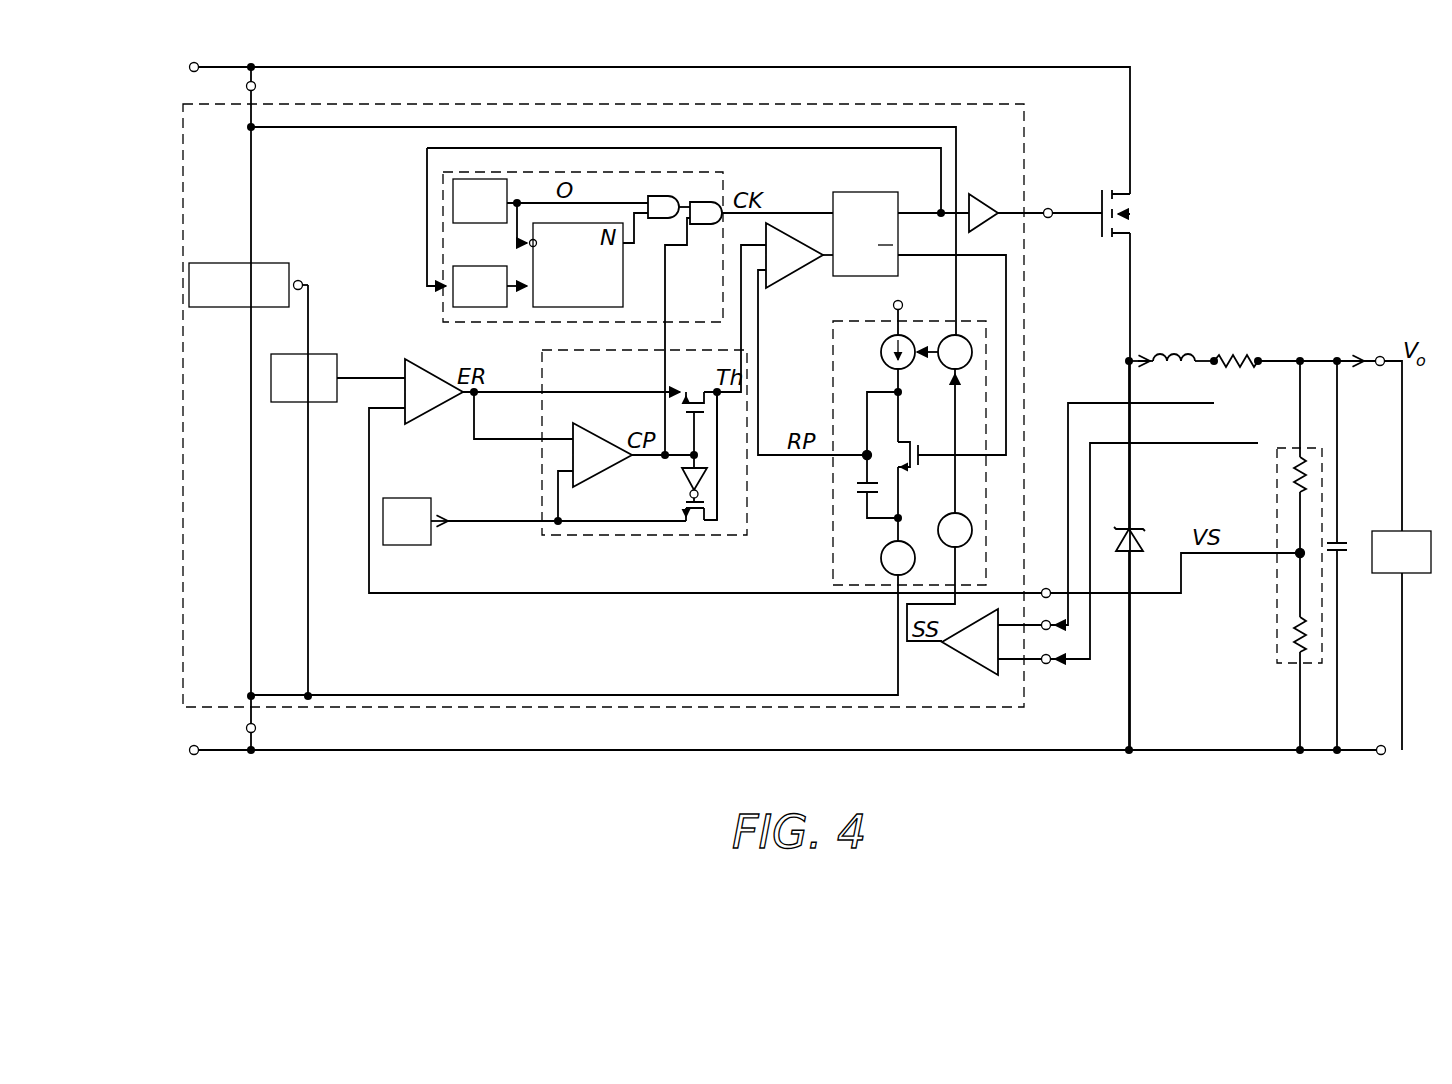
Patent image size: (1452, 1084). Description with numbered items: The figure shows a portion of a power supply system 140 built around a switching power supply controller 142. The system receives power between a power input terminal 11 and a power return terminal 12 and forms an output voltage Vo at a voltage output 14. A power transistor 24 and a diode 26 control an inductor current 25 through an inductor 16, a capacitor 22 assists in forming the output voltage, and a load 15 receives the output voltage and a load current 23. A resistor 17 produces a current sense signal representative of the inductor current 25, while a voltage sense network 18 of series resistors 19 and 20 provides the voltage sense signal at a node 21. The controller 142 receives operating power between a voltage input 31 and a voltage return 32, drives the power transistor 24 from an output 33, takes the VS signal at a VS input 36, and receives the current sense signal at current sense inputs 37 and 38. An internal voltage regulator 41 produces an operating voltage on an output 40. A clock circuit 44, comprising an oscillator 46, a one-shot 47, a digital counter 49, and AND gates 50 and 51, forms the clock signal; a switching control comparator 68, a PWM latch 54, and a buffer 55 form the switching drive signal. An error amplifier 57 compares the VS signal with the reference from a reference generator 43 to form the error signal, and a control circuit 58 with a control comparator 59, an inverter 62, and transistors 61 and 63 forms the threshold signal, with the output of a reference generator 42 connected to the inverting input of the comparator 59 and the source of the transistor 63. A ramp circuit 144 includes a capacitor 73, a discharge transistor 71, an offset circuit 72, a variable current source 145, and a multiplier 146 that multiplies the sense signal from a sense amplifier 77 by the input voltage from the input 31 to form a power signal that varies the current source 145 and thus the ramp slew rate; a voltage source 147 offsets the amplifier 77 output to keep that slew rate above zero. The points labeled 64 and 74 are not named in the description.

The power input terminal 11 is at (196, 62).
The power return terminal 12 is at (196, 755).
The voltage output 14 is at (1384, 354).
The load 15 is at (1387, 574).
The inductor 16 is at (1175, 352).
The resistor 17 is at (1242, 352).
The voltage sense network 18 is at (1283, 666).
The resistor 19 is at (1296, 480).
The resistor 20 is at (1293, 630).
The node 21 is at (1296, 558).
The capacitor 22 is at (1345, 540).
The load current 23 is at (1364, 350).
The power transistor 24 is at (1146, 216).
The inductor current 25 is at (1147, 354).
The diode 26 is at (1142, 535).
The voltage input 31 is at (258, 88).
The voltage return 32 is at (258, 730).
The output 33 is at (1050, 209).
The VS input 36 is at (1046, 588).
The current sense input 37 is at (1054, 628).
The current sense input 38 is at (1052, 666).
The output 40 is at (300, 280).
The internal voltage regulator 41 is at (238, 308).
The reference generator 42 is at (382, 522).
The reference generator 43 is at (298, 404).
The clock circuit 44 is at (443, 318).
The oscillator 46 is at (484, 223).
The one-shot 47 is at (478, 266).
The digital counter 49 is at (624, 272).
The AND gate 50 is at (668, 222).
The AND gate 51 is at (709, 226).
The PWM latch 54 is at (864, 192).
The buffer 55 is at (985, 194).
The error amplifier 57 is at (403, 364).
The control circuit 58 is at (541, 370).
The control comparator 59 is at (582, 432).
The transistor 61 is at (697, 390).
The inverter 62 is at (683, 480).
The transistor 63 is at (688, 523).
The threshold node 64 is at (718, 398).
The switching control comparator 68 is at (788, 272).
The transistor 71 is at (912, 440).
The offset circuit 72 is at (882, 556).
The capacitor 73 is at (855, 496).
The ramp node 74 is at (865, 452).
The sense amplifier 77 is at (964, 660).
The power supply system 140 is at (914, 787).
The switching power supply controller 142 is at (930, 708).
The ramp circuit 144 is at (830, 376).
The variable current source 145 is at (882, 352).
The multiplier 146 is at (968, 340).
The voltage source 147 is at (942, 521).